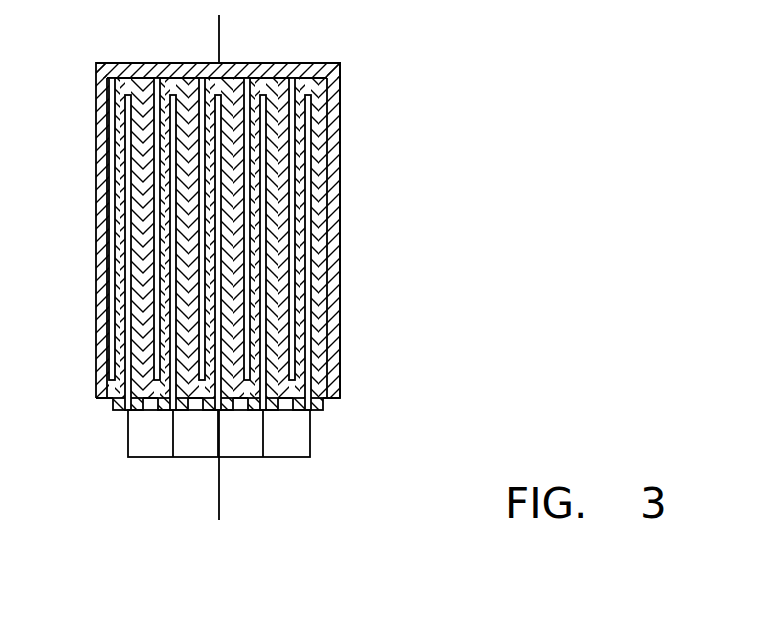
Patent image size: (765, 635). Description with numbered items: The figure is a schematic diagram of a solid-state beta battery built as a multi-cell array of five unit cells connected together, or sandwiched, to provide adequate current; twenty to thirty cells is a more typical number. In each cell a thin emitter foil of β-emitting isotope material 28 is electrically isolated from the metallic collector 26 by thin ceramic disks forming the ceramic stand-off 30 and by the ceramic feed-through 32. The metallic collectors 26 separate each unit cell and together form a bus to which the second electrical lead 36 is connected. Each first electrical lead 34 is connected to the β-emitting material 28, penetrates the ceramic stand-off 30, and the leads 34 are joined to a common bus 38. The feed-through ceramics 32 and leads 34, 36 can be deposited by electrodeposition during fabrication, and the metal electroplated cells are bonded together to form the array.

The metallic collector 26 is at (341, 163).
The β-emitting isotope material 28 is at (250, 78).
The ceramic stand-off 30 is at (330, 97).
The ceramic feed-through 32 is at (323, 405).
The first electrical lead 34 is at (128, 443).
The second electrical lead 36 is at (219, 30).
The bus 38 is at (240, 457).